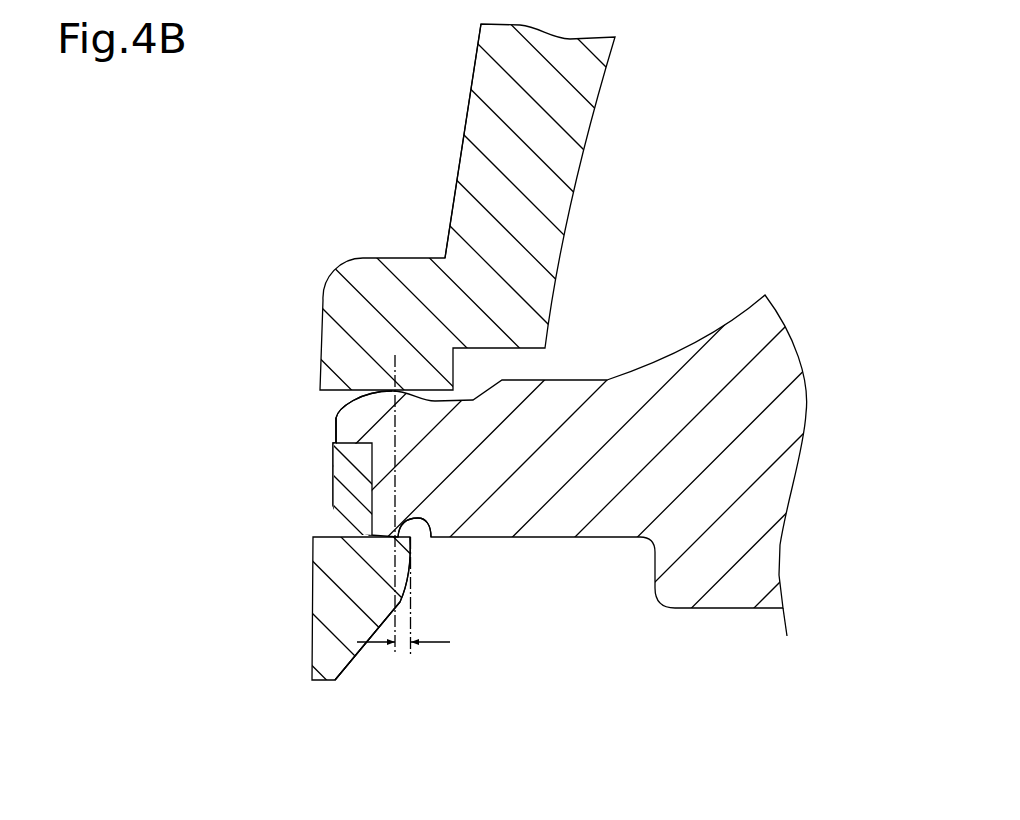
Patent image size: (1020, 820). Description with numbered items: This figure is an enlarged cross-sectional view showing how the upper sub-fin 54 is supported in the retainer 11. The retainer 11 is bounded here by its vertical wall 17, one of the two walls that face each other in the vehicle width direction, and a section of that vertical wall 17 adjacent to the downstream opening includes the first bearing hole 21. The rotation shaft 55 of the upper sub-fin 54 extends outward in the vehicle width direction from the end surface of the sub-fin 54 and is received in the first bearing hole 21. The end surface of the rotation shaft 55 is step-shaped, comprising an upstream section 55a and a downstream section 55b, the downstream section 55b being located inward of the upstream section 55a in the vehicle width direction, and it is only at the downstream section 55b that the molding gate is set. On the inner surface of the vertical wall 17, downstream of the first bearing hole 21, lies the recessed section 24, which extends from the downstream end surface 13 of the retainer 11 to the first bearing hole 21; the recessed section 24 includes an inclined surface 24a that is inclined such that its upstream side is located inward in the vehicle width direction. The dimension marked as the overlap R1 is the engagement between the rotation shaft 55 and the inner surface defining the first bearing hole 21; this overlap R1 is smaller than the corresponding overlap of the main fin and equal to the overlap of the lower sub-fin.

The retainer 11 is at (470, 63).
The downstream end surface 13 is at (313, 681).
The vertical wall 17 is at (463, 110).
The first bearing hole 21 is at (431, 537).
The recessed section 24 is at (367, 641).
The inclined surface 24a is at (370, 653).
The upper sub-fin 54 is at (728, 608).
The rotation shaft 55 is at (340, 410).
The upstream section 55a is at (336, 429).
The downstream section 55b is at (336, 481).
The overlap R1 is at (402, 647).